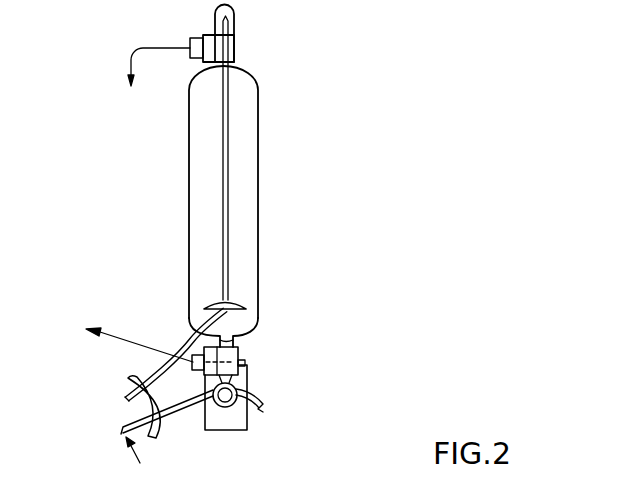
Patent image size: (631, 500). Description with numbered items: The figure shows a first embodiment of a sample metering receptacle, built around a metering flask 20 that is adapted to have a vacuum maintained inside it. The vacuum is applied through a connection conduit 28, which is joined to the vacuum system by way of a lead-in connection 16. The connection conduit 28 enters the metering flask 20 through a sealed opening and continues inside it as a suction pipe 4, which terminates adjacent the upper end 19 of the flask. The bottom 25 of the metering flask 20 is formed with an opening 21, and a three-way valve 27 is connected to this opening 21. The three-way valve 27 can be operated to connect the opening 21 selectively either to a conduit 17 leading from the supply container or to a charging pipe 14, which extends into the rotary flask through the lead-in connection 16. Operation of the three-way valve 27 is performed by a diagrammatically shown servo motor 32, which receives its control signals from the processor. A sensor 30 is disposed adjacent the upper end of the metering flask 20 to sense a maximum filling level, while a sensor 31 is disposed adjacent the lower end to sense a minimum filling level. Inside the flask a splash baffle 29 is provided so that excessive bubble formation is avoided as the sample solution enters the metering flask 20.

The suction pipe 4 is at (225, 107).
The charging pipe 14 is at (130, 428).
The lead-in connection 16 is at (152, 407).
The conduit 17 is at (264, 410).
The upper end 19 is at (235, 19).
The metering flask 20 is at (258, 185).
The opening 21 is at (240, 348).
The bottom 25 is at (237, 342).
The three-way valve 27 is at (244, 415).
The connection conduit 28 is at (190, 337).
The splash baffle 29 is at (244, 306).
The sensor 30 is at (197, 48).
The sensor 31 is at (192, 363).
The servo motor 32 is at (245, 363).